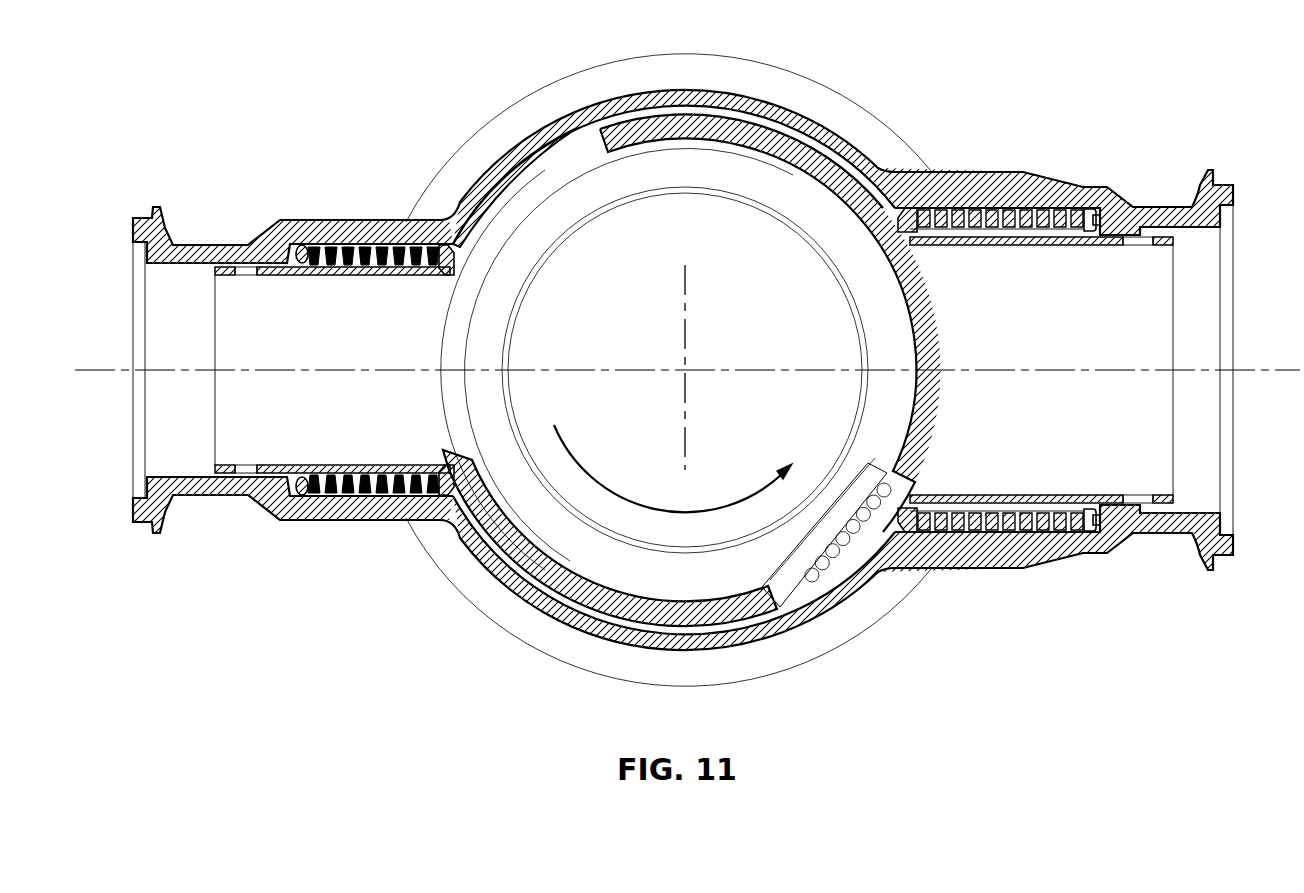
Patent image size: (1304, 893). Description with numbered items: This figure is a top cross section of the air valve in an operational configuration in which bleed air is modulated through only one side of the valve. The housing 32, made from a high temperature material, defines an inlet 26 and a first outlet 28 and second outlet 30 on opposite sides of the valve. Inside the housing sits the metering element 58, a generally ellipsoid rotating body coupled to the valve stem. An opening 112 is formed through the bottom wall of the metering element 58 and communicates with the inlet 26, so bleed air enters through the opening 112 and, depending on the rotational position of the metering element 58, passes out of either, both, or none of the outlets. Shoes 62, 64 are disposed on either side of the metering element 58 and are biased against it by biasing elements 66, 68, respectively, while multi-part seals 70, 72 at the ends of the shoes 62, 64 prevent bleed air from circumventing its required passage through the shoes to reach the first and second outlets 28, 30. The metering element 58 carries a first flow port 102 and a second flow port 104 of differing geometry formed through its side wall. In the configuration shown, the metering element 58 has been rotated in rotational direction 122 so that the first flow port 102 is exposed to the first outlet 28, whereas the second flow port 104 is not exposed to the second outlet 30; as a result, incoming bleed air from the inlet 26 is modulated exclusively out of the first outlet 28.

The inlet 26 is at (762, 210).
The first outlet 28 is at (155, 206).
The second outlet 30 is at (1211, 168).
The housing 32 is at (648, 89).
The metering element 58 is at (851, 143).
The shoe 62 is at (263, 276).
The shoe 64 is at (1113, 248).
The biasing element 66 is at (373, 258).
The biasing element 68 is at (1010, 208).
The multi-part seal 70 is at (298, 244).
The multi-part seal 72 is at (1093, 205).
The first flow port 102 is at (860, 493).
The second flow port 104 is at (503, 223).
The opening 112 is at (677, 359).
The rotational direction 122 is at (615, 487).